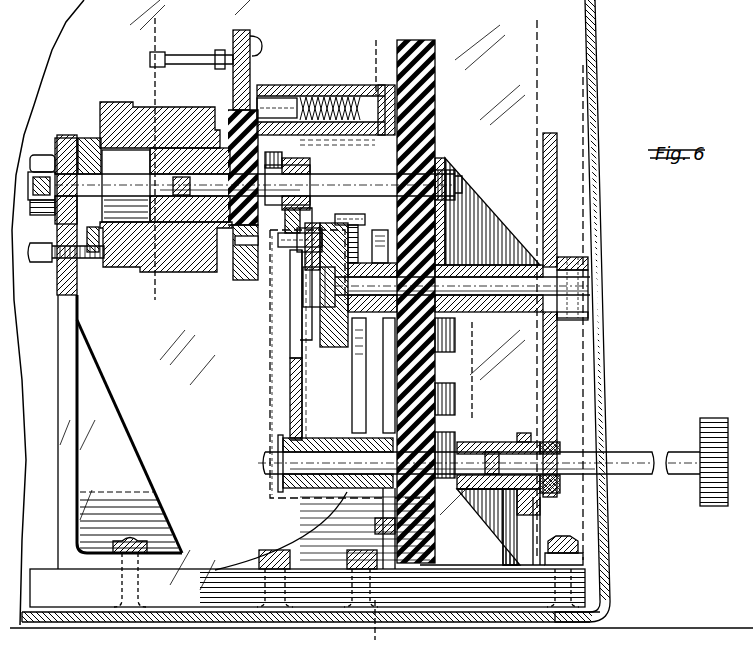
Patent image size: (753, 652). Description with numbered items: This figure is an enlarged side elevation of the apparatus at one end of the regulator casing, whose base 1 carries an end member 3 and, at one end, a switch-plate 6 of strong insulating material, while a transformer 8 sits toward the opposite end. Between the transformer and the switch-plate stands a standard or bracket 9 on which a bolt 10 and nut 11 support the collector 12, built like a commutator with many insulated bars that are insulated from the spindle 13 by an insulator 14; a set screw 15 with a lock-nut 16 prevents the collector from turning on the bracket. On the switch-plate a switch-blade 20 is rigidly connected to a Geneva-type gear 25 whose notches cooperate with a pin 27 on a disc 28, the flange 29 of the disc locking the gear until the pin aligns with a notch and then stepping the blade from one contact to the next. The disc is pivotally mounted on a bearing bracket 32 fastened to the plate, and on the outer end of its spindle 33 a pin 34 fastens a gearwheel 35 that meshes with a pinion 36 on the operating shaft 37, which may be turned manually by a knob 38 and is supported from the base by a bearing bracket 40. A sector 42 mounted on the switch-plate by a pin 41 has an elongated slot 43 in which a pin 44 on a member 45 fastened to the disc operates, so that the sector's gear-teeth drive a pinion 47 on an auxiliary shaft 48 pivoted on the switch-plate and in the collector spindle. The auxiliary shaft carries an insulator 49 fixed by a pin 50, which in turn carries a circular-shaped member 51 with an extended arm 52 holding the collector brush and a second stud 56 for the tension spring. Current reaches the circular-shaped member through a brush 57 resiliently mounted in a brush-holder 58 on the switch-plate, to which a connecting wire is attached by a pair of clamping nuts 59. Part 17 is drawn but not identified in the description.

The base 1 is at (215, 575).
The end member 3 is at (612, 560).
The switch-plate 6 is at (434, 65).
The transformer 8 is at (150, 45).
The standard or bracket 9 is at (68, 328).
The bolt 10 is at (62, 145).
The nut 11 is at (40, 172).
The collector 12 is at (117, 100).
The spindle 13 is at (150, 140).
The insulator 14 is at (178, 274).
The set screw 15 is at (95, 258).
The lock-nut 16 is at (45, 265).
The contact arm 17 is at (306, 272).
The switch-blade 20 is at (378, 234).
The gear of the Geneva type 25 is at (300, 434).
The pin 27 is at (355, 210).
The disc 28 is at (350, 405).
The annular portion or flange 29 is at (340, 345).
The bearing bracket 32 is at (478, 212).
The spindle 33 is at (497, 280).
The pin 34 is at (575, 262).
The gearwheel 35 is at (557, 207).
The pinion 36 is at (560, 432).
The operating shaft 37 is at (637, 452).
The knob 38 is at (706, 418).
The bearing bracket 40 is at (480, 498).
The pin 41 is at (270, 470).
The sector 42 is at (288, 403).
The elongated slot 43 is at (288, 340).
The pin 44 is at (288, 255).
The member 45 is at (320, 355).
The pinion 47 is at (310, 170).
The auxiliary shaft 48 is at (345, 180).
The insulator 49 is at (276, 153).
The pin 50 is at (334, 146).
The circular-shaped member 51 is at (282, 96).
The extended arm 52 is at (243, 32).
The second stud 56 is at (205, 47).
The brush 57 is at (311, 96).
The brush-holder 58 is at (343, 95).
The clamping nuts 59 is at (448, 95).